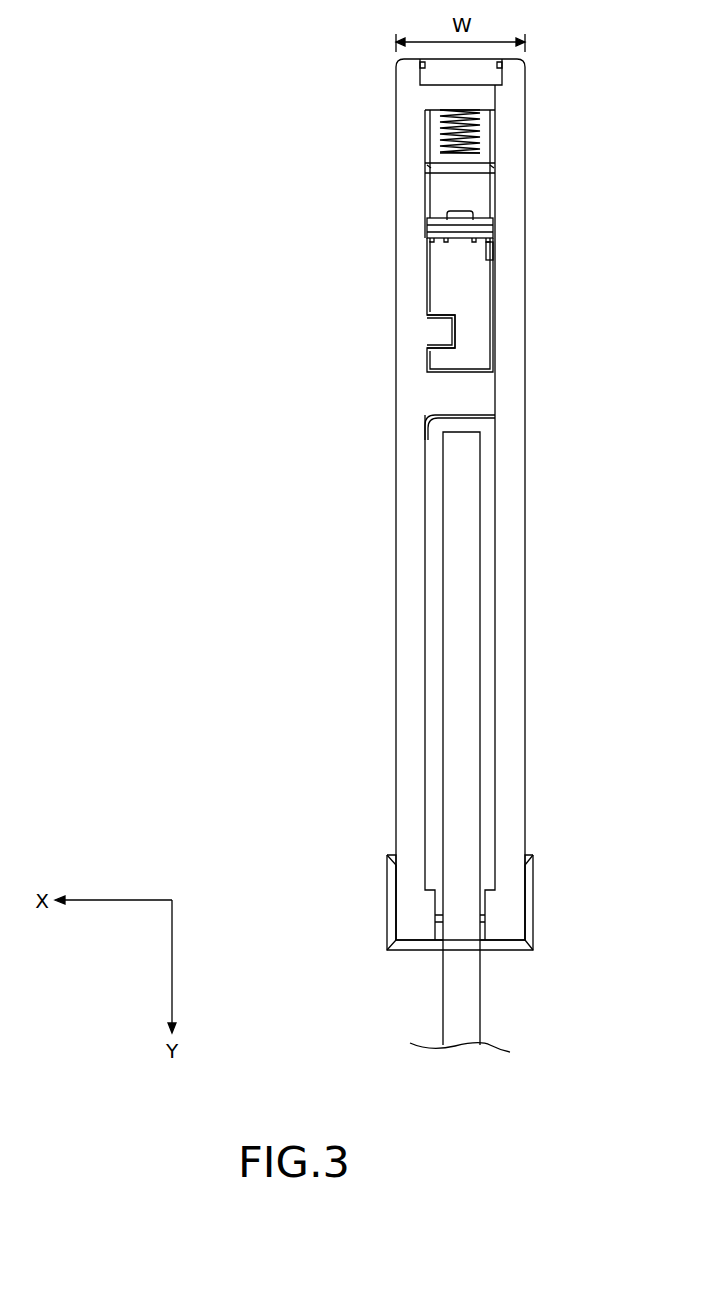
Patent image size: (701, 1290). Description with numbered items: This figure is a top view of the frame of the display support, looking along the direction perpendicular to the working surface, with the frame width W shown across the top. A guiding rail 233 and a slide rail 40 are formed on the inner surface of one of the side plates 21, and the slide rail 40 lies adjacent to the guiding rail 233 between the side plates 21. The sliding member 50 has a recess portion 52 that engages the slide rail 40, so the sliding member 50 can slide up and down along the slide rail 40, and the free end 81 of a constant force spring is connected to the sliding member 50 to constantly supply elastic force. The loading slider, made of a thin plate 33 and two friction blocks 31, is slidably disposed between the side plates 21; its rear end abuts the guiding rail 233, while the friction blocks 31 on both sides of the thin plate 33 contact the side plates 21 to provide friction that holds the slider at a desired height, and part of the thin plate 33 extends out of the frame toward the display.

The side plate 21 is at (507, 170).
The free end 81 is at (497, 232).
The sliding member 50 is at (470, 295).
The recess portion 52 is at (455, 335).
The slide rail 40 is at (435, 333).
The guiding rail 233 is at (470, 400).
The friction block 31 is at (435, 648).
The thin plate 33 is at (465, 757).